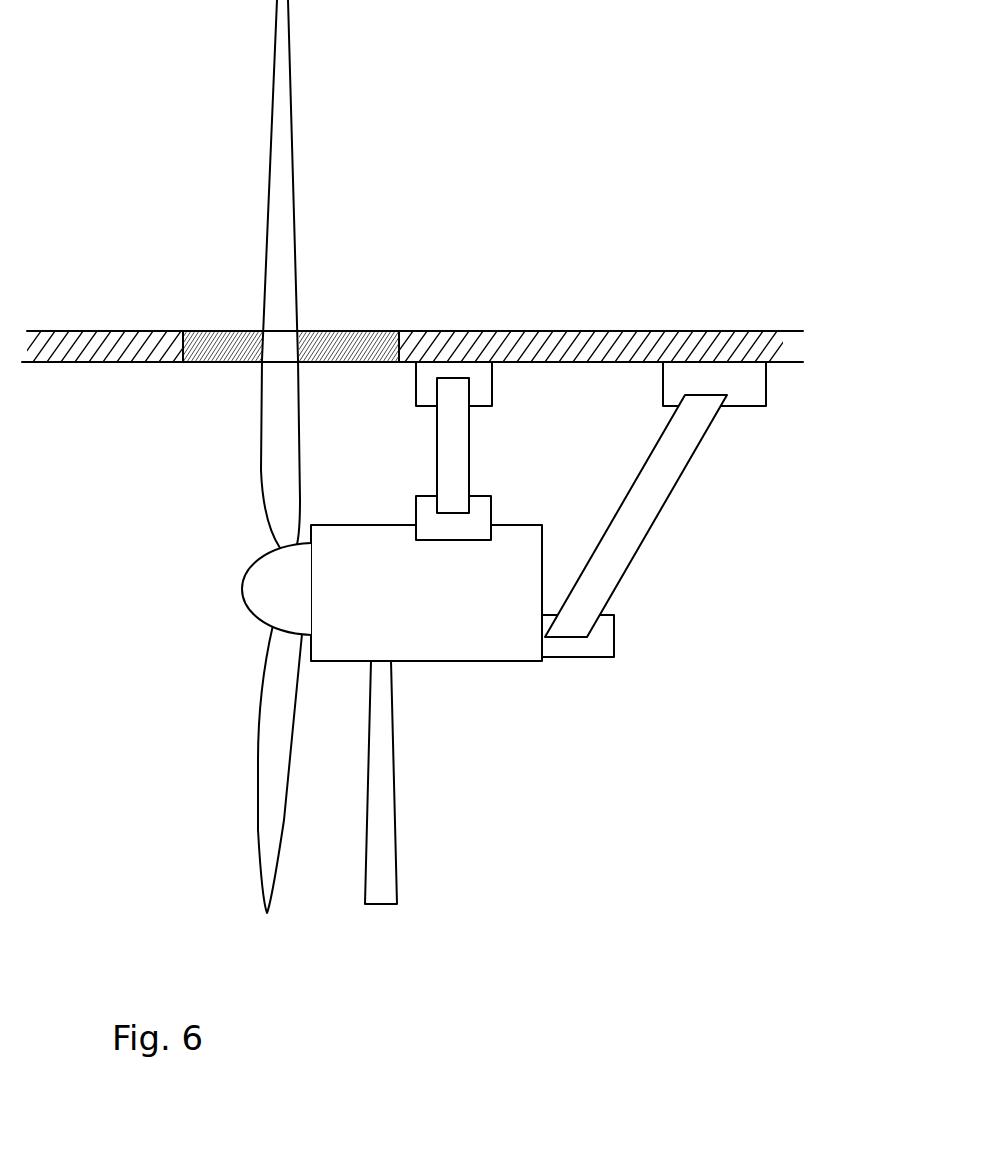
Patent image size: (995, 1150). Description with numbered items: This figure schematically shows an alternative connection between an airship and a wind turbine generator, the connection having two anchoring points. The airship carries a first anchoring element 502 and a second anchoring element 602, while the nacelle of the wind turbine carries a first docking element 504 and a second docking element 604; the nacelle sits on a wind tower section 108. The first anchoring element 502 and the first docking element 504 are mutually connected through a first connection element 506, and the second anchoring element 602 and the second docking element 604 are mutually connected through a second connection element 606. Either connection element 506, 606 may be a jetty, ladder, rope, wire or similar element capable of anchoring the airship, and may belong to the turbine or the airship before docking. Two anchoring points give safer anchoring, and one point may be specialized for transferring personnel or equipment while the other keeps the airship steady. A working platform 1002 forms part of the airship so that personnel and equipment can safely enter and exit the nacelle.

The working platform 1002 is at (93, 352).
The first anchoring element 502 is at (427, 378).
The first docking element 504 is at (480, 495).
The first connection element 506 is at (458, 470).
The second anchoring element 602 is at (754, 388).
The second docking element 604 is at (607, 630).
The second connection element 606 is at (620, 533).
The wind tower section 108 is at (377, 813).